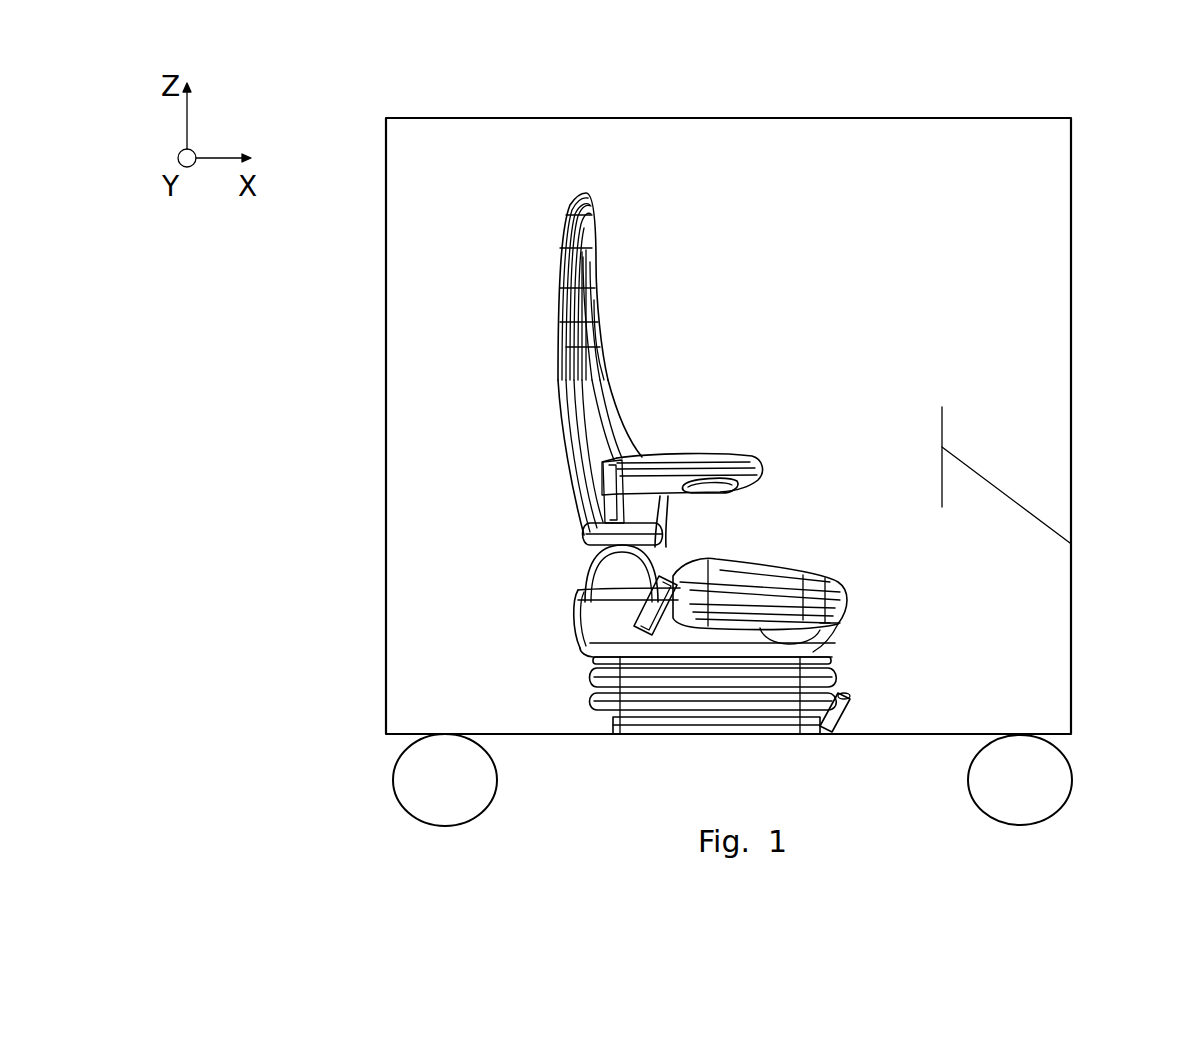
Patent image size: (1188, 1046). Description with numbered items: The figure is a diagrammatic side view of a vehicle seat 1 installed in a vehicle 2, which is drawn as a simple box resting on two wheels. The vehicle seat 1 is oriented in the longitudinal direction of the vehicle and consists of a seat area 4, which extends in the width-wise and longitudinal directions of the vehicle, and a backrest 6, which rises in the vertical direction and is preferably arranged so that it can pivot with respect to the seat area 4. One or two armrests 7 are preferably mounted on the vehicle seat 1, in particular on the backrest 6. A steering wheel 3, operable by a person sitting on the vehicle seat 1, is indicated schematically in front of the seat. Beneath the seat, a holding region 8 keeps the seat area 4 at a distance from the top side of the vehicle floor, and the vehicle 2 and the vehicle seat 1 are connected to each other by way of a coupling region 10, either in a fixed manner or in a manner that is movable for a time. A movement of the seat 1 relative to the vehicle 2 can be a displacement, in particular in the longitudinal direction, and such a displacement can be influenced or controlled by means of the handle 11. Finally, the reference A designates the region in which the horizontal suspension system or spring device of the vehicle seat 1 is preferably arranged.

The vehicle seat 1 is at (719, 438).
The vehicle 2 is at (356, 437).
The steering wheel 3 is at (942, 447).
The seat area 4 is at (712, 615).
The backrest 6 is at (600, 308).
The armrest 7 is at (735, 452).
The holding region 8 is at (600, 672).
The coupling region 10 is at (788, 737).
The handle 11 is at (847, 700).
The region A is at (835, 623).